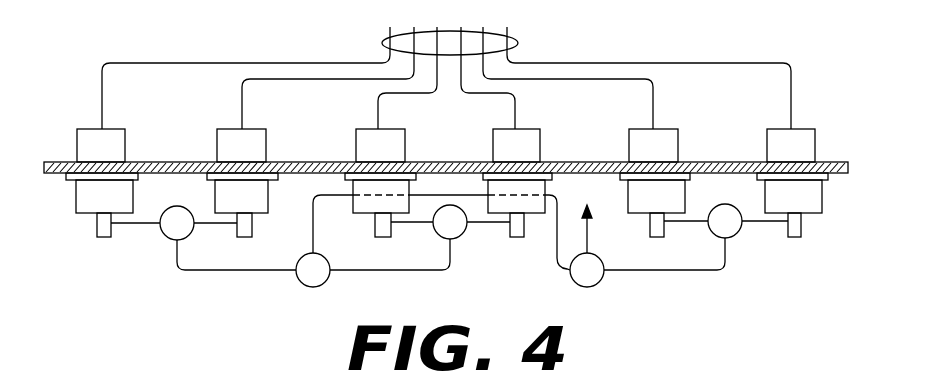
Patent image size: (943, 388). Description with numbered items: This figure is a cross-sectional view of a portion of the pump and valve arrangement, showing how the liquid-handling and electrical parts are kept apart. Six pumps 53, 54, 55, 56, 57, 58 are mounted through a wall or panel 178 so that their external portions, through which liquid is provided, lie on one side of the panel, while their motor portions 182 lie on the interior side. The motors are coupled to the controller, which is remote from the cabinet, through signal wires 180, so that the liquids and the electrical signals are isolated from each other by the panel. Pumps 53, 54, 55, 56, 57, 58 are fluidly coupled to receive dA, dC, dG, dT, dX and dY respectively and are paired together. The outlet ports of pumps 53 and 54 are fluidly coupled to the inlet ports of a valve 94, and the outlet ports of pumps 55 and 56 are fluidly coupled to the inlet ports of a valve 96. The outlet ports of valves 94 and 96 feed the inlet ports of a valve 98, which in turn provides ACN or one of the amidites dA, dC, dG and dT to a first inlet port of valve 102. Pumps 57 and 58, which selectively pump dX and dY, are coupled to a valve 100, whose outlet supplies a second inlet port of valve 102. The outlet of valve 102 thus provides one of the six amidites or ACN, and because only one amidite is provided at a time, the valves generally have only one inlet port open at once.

The pump 53 is at (84, 194).
The pump 54 is at (225, 194).
The pump 55 is at (353, 190).
The pump 56 is at (545, 187).
The pump 57 is at (640, 196).
The pump 58 is at (820, 192).
The valve 94 is at (167, 239).
The valve 96 is at (455, 239).
The valve 98 is at (324, 282).
The valve 100 is at (737, 235).
The valve 102 is at (598, 282).
The manifold plate 178 is at (838, 160).
The signal wires 180 is at (518, 43).
The motor portions 182 is at (126, 141).